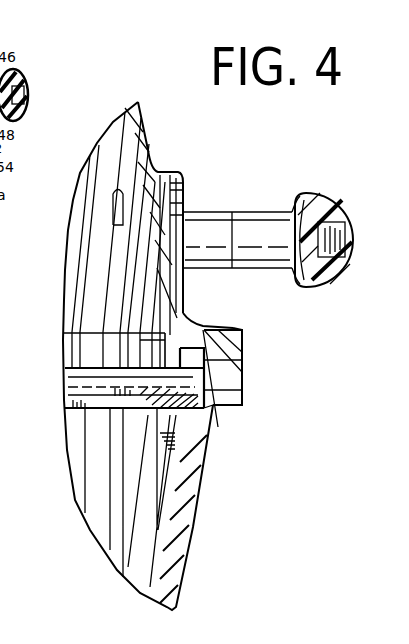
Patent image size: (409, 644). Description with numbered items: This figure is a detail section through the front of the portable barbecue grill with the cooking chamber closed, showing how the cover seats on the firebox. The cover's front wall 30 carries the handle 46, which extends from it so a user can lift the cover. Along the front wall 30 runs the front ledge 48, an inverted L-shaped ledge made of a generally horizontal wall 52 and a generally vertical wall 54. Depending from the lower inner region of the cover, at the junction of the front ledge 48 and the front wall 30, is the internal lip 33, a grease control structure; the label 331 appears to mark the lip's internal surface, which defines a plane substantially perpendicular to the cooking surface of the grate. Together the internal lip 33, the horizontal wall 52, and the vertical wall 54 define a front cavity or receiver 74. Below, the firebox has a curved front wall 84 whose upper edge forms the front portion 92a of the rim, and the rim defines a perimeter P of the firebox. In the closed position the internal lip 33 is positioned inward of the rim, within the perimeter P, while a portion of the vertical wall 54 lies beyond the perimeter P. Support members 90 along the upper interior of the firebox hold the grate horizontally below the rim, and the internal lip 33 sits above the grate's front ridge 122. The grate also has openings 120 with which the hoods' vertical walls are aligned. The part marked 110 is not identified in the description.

The front wall 30 is at (140, 150).
The handle 46 is at (330, 193).
The front ledge 48 is at (245, 325).
The internal lip 33 is at (188, 347).
The horizontal wall 52 is at (233, 328).
The band 331 is at (140, 347).
The pin 110 is at (65, 373).
The openings 120 is at (68, 413).
The front cavity 74 is at (235, 331).
The front portion of the rim 92a is at (236, 357).
The vertical wall 54 is at (243, 380).
The perimeter P is at (245, 398).
The front ridge 122 is at (220, 415).
The support members 90 is at (187, 440).
The front wall 84 is at (203, 467).